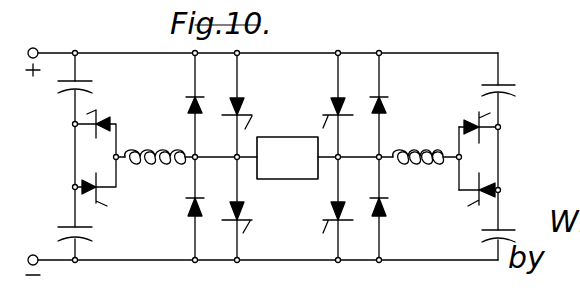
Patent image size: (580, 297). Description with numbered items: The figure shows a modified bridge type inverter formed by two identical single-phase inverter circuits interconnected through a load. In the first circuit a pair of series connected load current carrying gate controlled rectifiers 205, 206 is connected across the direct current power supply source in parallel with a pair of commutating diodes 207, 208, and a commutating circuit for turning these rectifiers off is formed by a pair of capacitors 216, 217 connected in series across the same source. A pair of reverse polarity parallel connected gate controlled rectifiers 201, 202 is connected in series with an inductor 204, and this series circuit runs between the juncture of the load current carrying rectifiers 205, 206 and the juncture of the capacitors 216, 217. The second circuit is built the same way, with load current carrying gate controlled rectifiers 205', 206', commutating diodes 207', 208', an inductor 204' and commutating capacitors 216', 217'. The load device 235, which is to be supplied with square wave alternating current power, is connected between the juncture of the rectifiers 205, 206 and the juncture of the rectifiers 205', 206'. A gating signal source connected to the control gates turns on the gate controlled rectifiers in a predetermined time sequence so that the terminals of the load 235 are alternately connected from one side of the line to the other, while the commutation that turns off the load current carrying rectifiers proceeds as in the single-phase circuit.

The gate controlled rectifier 201 is at (100, 110).
The gate controlled rectifier 202 is at (95, 175).
The inductor 204 is at (155, 145).
The inductor 204' is at (419, 146).
The load current carrying gate controlled rectifier 205 is at (253, 108).
The load current carrying gate controlled rectifier 205' is at (329, 101).
The load current carrying gate controlled rectifier 206 is at (258, 228).
The load current carrying gate controlled rectifier 206' is at (321, 214).
The commutating diode 207 is at (180, 93).
The commutating diode 207' is at (403, 99).
The commutating diode 208 is at (171, 208).
The commutating diode 208' is at (402, 213).
The capacitor 216 is at (94, 80).
The capacitor 216' is at (517, 77).
The capacitor 217 is at (99, 238).
The capacitor 217' is at (513, 220).
The load device 235 is at (288, 132).